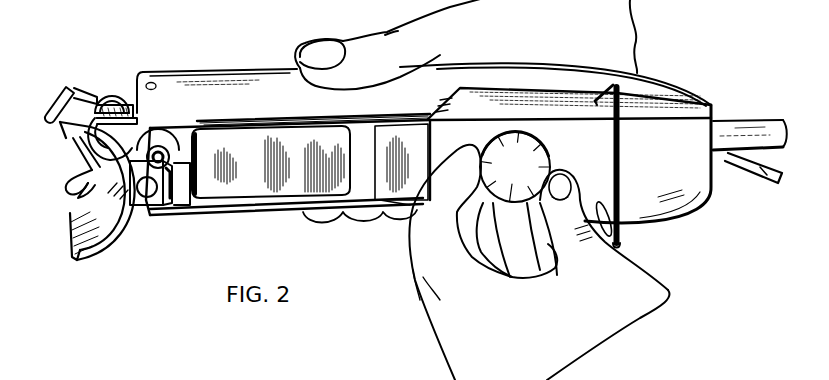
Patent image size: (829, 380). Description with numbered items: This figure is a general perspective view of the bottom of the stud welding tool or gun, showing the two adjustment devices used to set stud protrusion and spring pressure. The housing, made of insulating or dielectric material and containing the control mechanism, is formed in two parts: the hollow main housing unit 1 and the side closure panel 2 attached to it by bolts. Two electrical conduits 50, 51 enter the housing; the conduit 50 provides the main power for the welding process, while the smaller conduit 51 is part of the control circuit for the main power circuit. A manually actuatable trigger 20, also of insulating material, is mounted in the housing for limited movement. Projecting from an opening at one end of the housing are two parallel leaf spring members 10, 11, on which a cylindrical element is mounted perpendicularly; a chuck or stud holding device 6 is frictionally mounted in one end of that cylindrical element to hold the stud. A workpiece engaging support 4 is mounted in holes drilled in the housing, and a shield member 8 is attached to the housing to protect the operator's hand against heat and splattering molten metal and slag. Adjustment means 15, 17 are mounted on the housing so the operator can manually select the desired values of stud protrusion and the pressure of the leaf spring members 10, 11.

The main housing unit 1 is at (680, 192).
The side closure panel 2 is at (553, 77).
The workpiece engaging support 4 is at (620, 162).
The chuck 6 is at (73, 172).
The shield member 8 is at (107, 225).
The leaf spring member 10 is at (112, 93).
The leaf spring member 11 is at (131, 100).
The adjustment means 15 is at (180, 186).
The adjustment means 17 is at (545, 155).
The trigger 20 is at (277, 177).
The electrical conduit 50 is at (752, 130).
The electrical conduit 51 is at (762, 172).